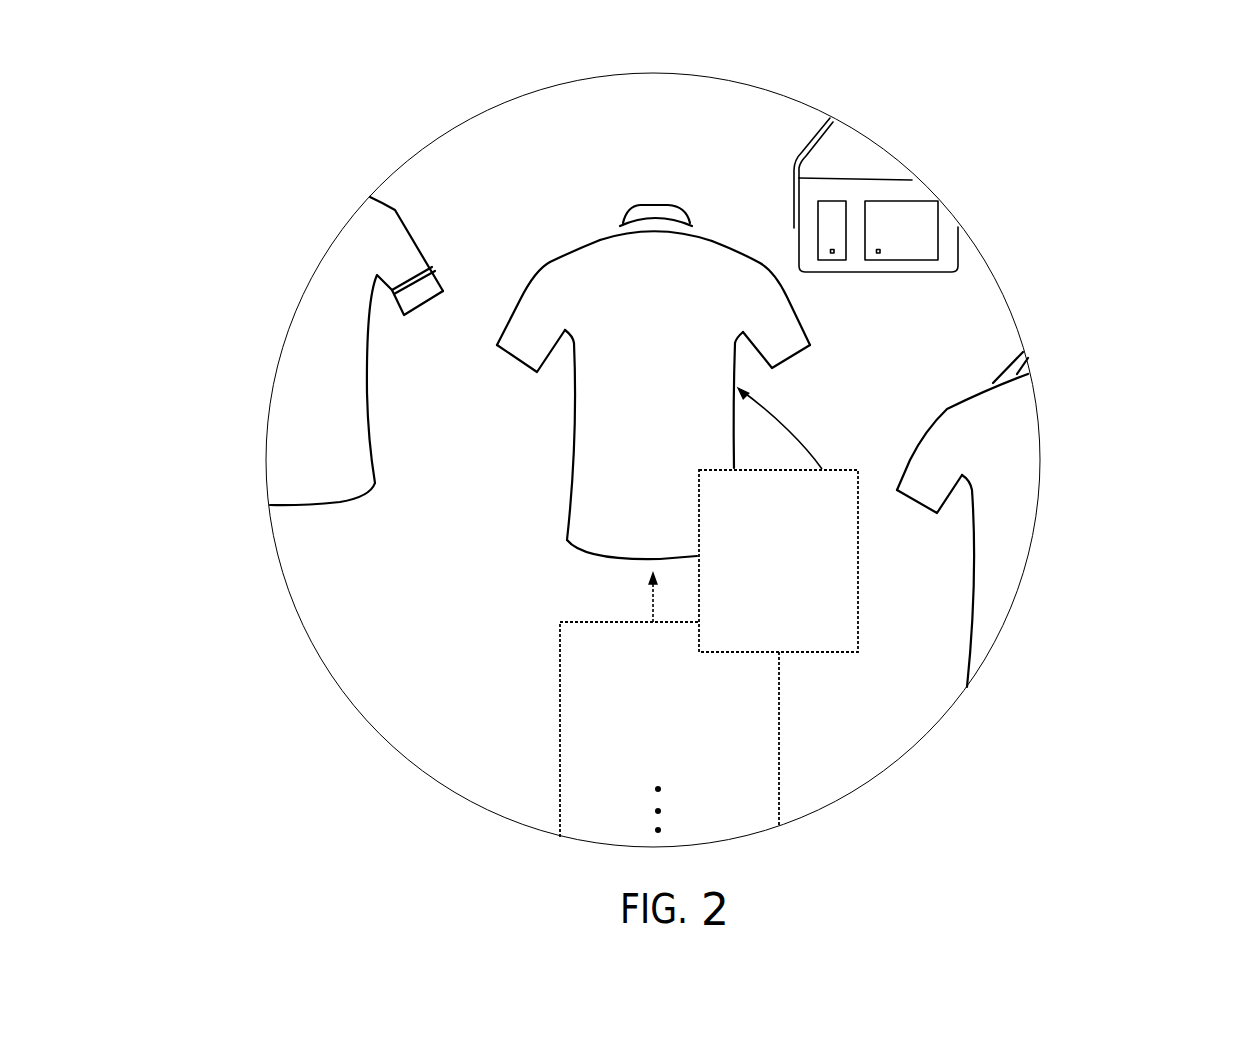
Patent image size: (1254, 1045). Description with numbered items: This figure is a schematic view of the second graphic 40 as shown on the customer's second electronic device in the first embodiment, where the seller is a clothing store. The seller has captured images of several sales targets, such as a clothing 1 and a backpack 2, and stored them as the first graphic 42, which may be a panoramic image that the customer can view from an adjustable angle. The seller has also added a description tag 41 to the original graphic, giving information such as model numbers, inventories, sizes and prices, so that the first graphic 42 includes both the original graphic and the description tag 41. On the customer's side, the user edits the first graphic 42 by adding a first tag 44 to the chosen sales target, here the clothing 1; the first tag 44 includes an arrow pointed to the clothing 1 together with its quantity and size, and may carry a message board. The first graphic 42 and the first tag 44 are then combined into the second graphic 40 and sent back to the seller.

The clothing 1 is at (728, 247).
The backpack 2 is at (904, 189).
The second graphic 40 is at (974, 519).
The description tag 41 is at (557, 715).
The first graphic 42 is at (1038, 426).
The first tag 44 is at (860, 568).